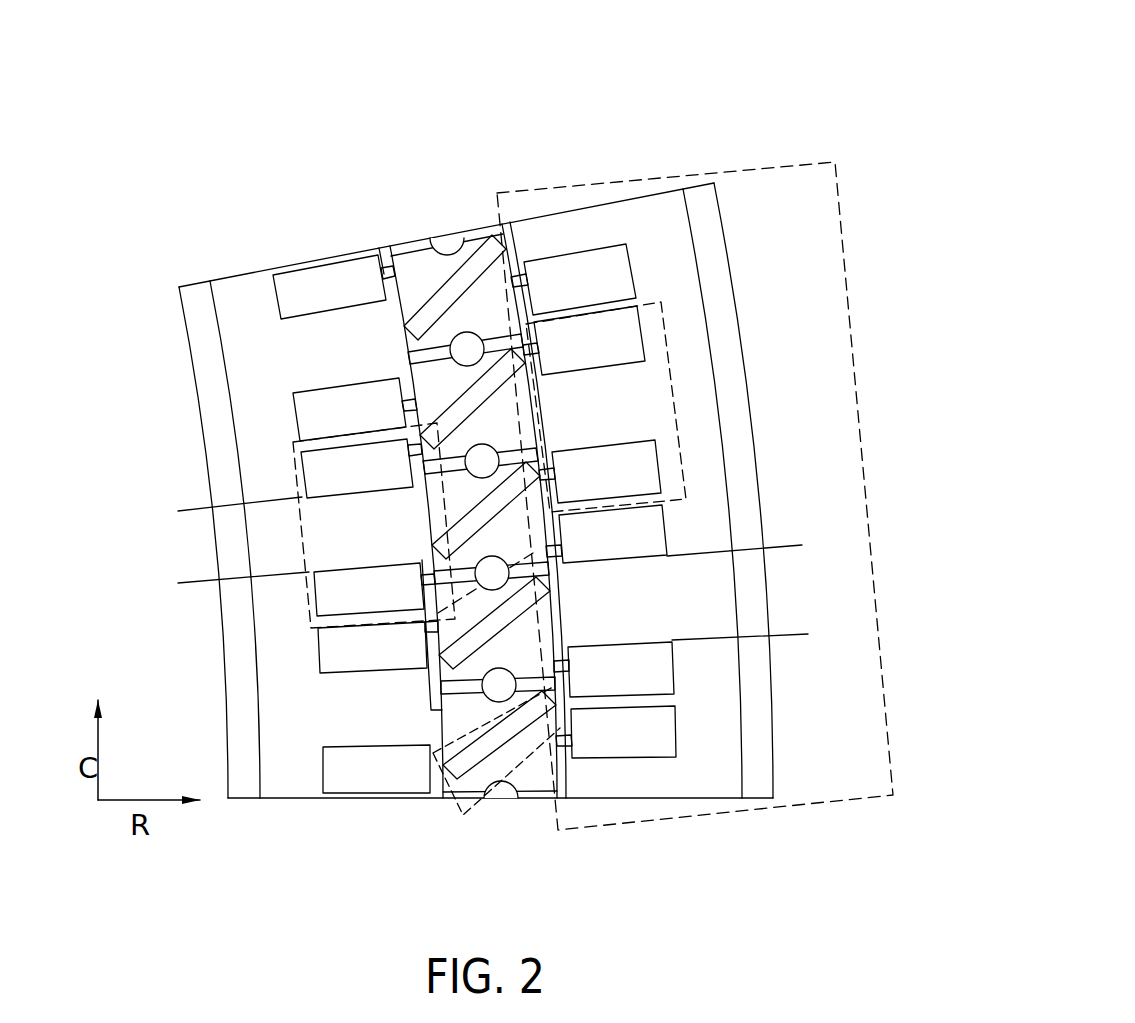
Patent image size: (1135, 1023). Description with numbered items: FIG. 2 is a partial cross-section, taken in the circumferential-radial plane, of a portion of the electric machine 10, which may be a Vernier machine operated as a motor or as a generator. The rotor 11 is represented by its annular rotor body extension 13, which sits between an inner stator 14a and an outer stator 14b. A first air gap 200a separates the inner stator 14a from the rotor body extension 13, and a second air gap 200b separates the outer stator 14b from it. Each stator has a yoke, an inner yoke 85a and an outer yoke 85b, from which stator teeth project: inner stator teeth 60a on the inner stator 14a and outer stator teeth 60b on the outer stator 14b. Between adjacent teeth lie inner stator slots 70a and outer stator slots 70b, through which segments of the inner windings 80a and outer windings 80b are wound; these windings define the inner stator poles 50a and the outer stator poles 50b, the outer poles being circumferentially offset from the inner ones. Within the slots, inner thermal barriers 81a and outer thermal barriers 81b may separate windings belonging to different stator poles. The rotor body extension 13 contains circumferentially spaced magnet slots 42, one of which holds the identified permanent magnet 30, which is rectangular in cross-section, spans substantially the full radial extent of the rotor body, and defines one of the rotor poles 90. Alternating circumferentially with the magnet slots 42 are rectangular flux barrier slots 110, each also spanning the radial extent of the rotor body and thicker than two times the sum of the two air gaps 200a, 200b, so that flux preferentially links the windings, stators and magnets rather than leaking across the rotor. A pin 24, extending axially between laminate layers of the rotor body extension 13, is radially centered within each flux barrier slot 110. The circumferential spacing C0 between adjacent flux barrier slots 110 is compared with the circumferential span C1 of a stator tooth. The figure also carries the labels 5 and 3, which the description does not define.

The electric machine 10 is at (708, 102).
The module region 5 is at (775, 165).
The rotor body extension 13 is at (537, 798).
The inner stator 14a is at (224, 529).
The outer stator 14b is at (740, 524).
The inner yoke 85a is at (245, 285).
The outer yoke 85b is at (678, 262).
The first air gap 200a is at (398, 300).
The second air gap 200b is at (513, 293).
The inner stator tooth 60a is at (300, 332).
The outer stator tooth 60b is at (602, 423).
The inner windings 80a is at (340, 420).
The outer windings 80b is at (600, 337).
The inner stator pole 50a is at (282, 465).
The outer stator pole 50b is at (678, 338).
The inner thermal barrier 81a is at (307, 631).
The outer thermal barrier 81b is at (623, 698).
The inner stator slot 70a is at (318, 653).
The outer stator slot 70b is at (670, 770).
The connection tabs 3 is at (432, 687).
The magnet slot 42 is at (553, 723).
The permanent magnet 30 is at (525, 732).
The flux barrier slot 110 is at (504, 443).
The pin 24 is at (495, 573).
The rotor 11 is at (500, 818).
The rotor pole 90 is at (465, 832).
The circumferential spacing between adjacent flux barrier slots C0 is at (200, 512).
The circumferential span of stator tooth C1 is at (792, 548).